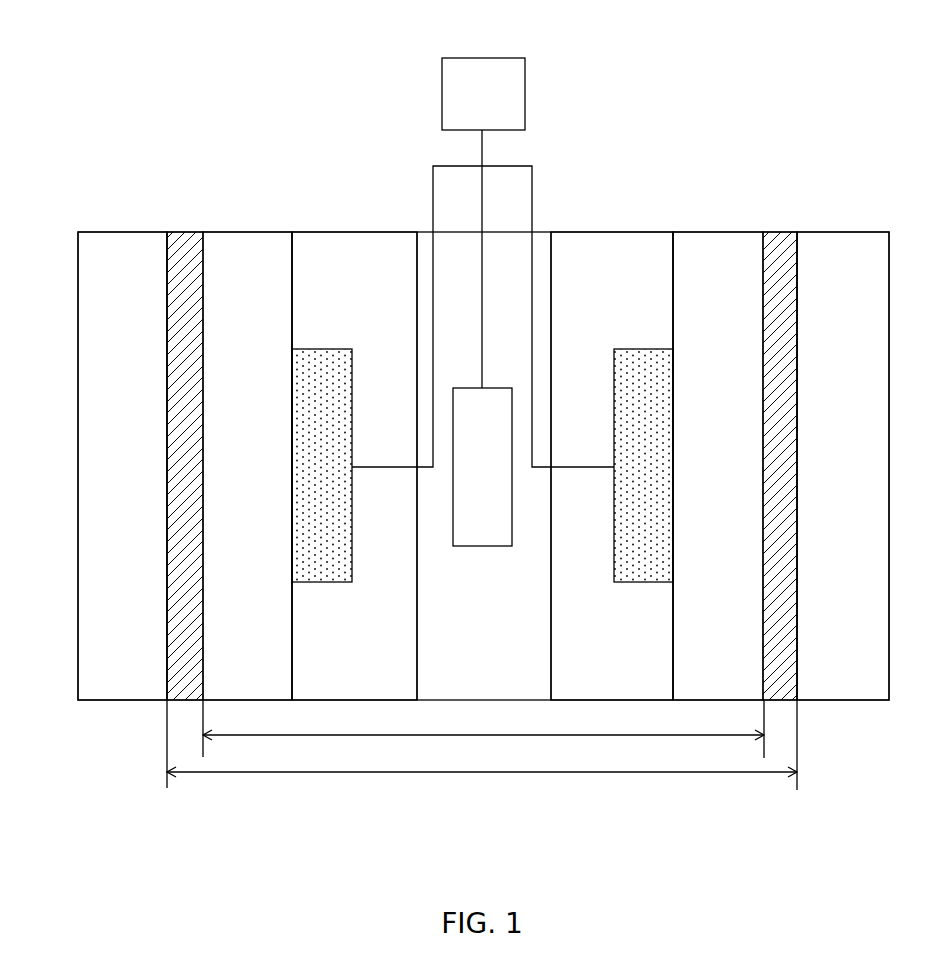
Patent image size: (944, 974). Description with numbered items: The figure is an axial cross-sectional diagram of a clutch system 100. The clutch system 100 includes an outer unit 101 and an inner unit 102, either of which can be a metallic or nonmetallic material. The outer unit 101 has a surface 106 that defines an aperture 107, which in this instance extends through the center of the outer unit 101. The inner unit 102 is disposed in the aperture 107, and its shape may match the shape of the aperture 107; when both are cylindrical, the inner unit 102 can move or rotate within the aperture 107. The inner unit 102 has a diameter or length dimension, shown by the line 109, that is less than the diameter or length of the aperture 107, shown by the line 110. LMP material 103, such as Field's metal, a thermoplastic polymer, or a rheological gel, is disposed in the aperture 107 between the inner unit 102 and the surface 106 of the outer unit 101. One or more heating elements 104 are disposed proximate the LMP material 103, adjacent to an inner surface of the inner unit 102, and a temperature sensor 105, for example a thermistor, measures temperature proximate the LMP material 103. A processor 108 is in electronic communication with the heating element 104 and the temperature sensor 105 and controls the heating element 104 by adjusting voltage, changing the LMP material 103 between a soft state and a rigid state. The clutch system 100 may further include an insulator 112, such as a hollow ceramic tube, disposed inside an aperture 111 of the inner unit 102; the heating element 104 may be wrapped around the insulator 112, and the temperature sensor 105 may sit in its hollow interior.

The clutch system 100 is at (87, 139).
The outer unit 101 is at (483, 466).
The inner unit 102 is at (483, 466).
The LMP material 103 is at (185, 232).
The heating element 104 is at (482, 465).
The temperature sensor 105 is at (482, 467).
The surface 106 is at (167, 257).
The aperture 107 is at (602, 783).
The processor 108 is at (483, 94).
The line 109 is at (483, 729).
The line 110 is at (482, 745).
The aperture 111 is at (582, 212).
The insulator 112 is at (482, 466).